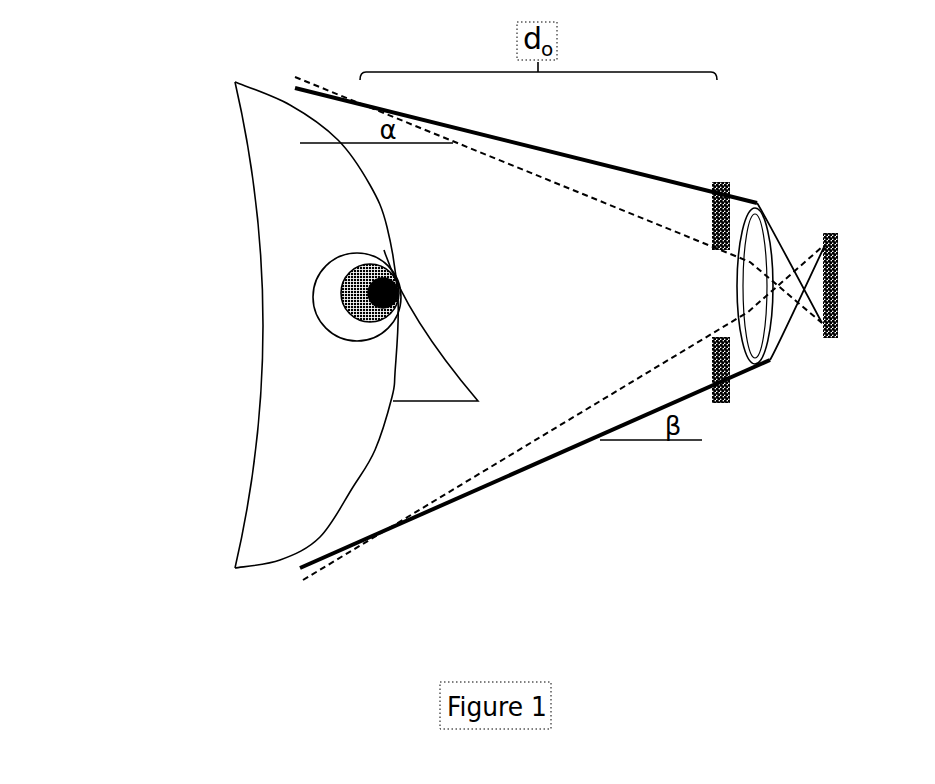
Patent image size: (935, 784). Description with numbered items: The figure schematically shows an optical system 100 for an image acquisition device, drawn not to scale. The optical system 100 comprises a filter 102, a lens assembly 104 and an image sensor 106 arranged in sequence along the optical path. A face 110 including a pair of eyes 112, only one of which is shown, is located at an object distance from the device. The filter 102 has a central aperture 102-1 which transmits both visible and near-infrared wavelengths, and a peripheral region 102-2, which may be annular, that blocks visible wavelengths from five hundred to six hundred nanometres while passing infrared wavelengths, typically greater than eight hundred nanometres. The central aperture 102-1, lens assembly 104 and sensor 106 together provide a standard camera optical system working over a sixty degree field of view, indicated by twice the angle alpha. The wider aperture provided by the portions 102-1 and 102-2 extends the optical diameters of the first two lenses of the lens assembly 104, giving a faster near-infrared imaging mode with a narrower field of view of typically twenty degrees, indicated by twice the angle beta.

The optical system 100 is at (681, 488).
The filter 102 is at (674, 302).
The central aperture 102-1 is at (706, 282).
The peripheral region 102-2 is at (737, 404).
The lens assembly 104 is at (779, 363).
The image sensor 106 is at (842, 233).
The face 110 is at (272, 433).
The eye 112 is at (313, 290).